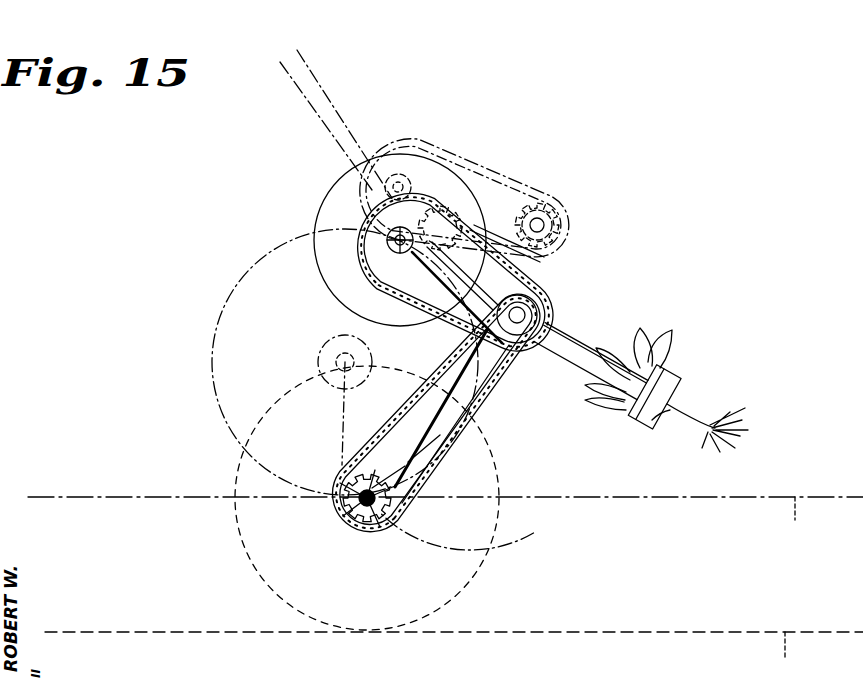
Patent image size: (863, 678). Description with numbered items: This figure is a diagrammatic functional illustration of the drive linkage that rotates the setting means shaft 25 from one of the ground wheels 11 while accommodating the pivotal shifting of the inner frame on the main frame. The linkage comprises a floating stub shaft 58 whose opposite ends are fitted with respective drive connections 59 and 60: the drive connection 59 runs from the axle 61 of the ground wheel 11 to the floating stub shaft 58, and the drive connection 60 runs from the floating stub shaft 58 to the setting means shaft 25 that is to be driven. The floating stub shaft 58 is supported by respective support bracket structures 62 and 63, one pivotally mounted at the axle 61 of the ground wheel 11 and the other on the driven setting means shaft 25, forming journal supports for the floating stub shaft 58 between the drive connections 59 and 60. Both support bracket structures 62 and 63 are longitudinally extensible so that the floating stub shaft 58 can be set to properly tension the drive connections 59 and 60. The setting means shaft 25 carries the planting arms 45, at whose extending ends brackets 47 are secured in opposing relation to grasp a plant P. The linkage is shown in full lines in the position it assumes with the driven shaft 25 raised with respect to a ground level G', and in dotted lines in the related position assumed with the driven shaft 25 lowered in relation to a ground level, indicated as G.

The ground wheel 11 is at (212, 381).
The setting means shaft 25 is at (340, 176).
The planting arm 45 is at (586, 348).
The bracket 47 is at (672, 374).
The floating stub shaft 58 is at (545, 224).
The drive connection 59 is at (490, 393).
The drive connection 60 is at (460, 153).
The axle 61 is at (344, 362).
The support bracket structure 62 is at (362, 292).
The support bracket structure 63 is at (498, 190).
The plant P is at (730, 414).
The ground line G is at (454, 653).
The ground level G' is at (445, 515).